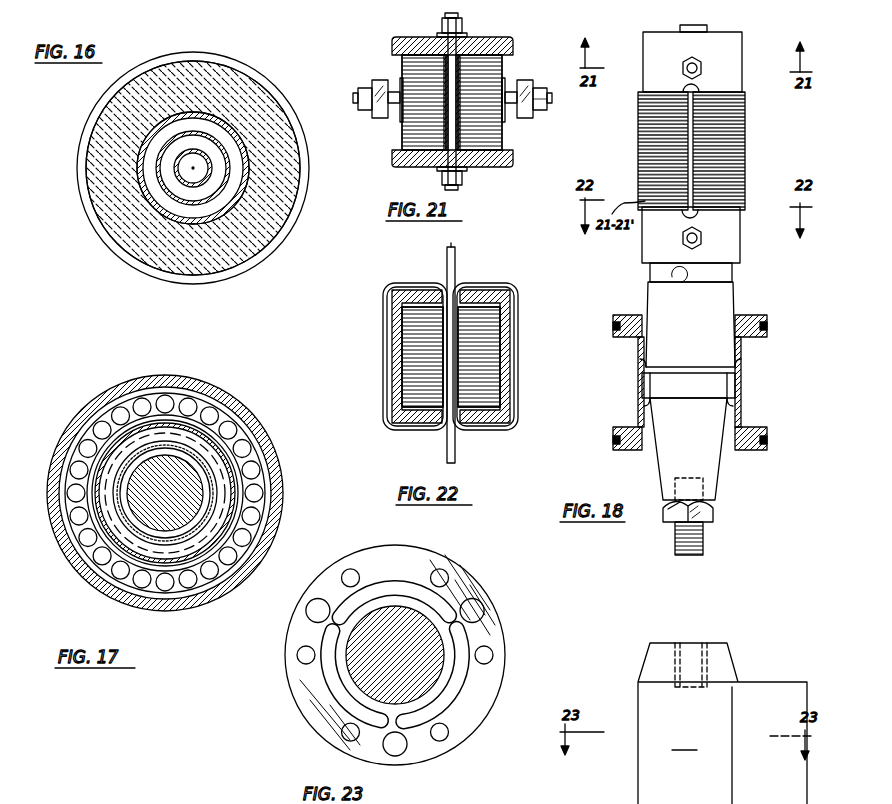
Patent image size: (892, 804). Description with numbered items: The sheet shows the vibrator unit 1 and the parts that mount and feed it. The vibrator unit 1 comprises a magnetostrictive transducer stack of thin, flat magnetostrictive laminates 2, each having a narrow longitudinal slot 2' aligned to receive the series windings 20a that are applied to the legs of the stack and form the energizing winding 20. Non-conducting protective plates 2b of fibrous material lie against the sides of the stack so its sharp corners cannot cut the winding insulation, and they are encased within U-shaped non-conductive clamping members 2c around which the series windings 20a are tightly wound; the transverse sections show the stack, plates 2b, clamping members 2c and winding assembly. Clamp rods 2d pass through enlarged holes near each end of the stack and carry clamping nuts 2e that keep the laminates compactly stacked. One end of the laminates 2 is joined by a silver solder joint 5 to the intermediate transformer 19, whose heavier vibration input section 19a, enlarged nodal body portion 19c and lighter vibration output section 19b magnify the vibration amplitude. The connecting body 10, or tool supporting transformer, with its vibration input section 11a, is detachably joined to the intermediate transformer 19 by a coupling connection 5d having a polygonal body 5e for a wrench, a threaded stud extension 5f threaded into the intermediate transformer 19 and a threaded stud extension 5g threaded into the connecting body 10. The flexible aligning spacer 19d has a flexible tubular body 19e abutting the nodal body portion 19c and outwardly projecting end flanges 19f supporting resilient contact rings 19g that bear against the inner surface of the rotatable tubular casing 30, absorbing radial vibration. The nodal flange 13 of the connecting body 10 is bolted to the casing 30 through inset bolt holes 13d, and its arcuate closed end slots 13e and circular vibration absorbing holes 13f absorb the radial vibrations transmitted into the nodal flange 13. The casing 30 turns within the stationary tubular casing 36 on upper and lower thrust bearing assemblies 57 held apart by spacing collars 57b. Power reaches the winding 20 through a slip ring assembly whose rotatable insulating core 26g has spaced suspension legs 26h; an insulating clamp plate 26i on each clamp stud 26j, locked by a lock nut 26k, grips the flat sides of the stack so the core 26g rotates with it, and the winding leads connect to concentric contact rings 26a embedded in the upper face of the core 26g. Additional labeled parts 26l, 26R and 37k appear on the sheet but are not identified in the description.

In FIG. 21, the vibrator unit 1 is at (398, 62).
In FIG. 22, the vibrator unit 1 is at (502, 350).
In FIG. 18, the vibrator unit 1 is at (745, 41).
In FIG. 21, the magnetostrictive laminates 2 is at (426, 102).
In FIG. 22, the magnetostrictive laminates 2 is at (452, 357).
In FIG. 18, the magnetostrictive laminates 2 is at (714, 270).
In FIG. 22, the longitudinal slot 2' is at (466, 353).
In FIG. 18, the longitudinal slot 2' is at (655, 141).
In FIG. 21, the non-conducting protective plates 2b is at (476, 42).
In FIG. 22, the non-conducting protective plates 2b is at (482, 292).
In FIG. 21, the non-conductive clamping members 2c is at (500, 46).
In FIG. 22, the non-conductive clamping members 2c is at (418, 292).
In FIG. 18, the non-conductive clamping members 2c is at (722, 70).
In FIG. 21, the clamp rods 2d is at (455, 80).
In FIG. 18, the clamp rods 2d is at (682, 65).
In FIG. 21, the clamping nuts 2e is at (438, 28).
In FIG. 18, the clamping nuts 2e is at (706, 67).
In FIG. 18, the silver solder joint 5 is at (682, 283).
In FIG. 18, the coupling connection 5d is at (716, 519).
In FIG. 18, the polygonal body 5e is at (670, 515).
In FIG. 18, the threaded stud extension 5f is at (706, 488).
In FIG. 18, the threaded stud extension 5g is at (705, 543).
In FIG. 23, the connecting body 10 is at (636, 785).
In FIG. 23, the vibration input section 11a is at (399, 618).
In FIG. 23, the nodal flange 13 is at (460, 729).
In FIG. 23, the inset bolt holes 13d is at (344, 572).
In FIG. 23, the arcuate closed end slots 13e is at (383, 590).
In FIG. 23, the circular vibration absorbing holes 13f is at (308, 608).
In FIG. 17, the intermediate transformer 19 is at (206, 477).
In FIG. 17, the vibration input section 19a is at (192, 490).
In FIG. 18, the vibration input section 19a is at (700, 326).
In FIG. 18, the vibration output section 19b is at (700, 454).
In FIG. 17, the enlarged nodal body portion 19c is at (203, 457).
In FIG. 18, the enlarged nodal body portion 19c is at (660, 386).
In FIG. 18, the flexible aligning spacer 19d is at (627, 315).
In FIG. 17, the flexible tubular body 19e is at (220, 501).
In FIG. 18, the flexible tubular body 19e is at (638, 362).
In FIG. 17, the end flanges 19f is at (201, 441).
In FIG. 18, the end flanges 19f is at (760, 317).
In FIG. 17, the resilient contact rings 19g is at (191, 428).
In FIG. 18, the resilient contact rings 19g is at (613, 326).
In FIG. 22, the energizing winding 20 is at (380, 303).
In FIG. 22, the series windings 20a is at (386, 343).
In FIG. 18, the series windings 20a is at (640, 145).
In FIG. 16, the contact rings 26a is at (232, 183).
In FIG. 16, the insulating core 26g is at (130, 198).
In FIG. 21, the suspension legs 26h is at (380, 130).
In FIG. 21, the insulating clamp plate 26i is at (505, 118).
In FIG. 21, the clamp stud 26j is at (352, 95).
In FIG. 21, the lock nut 26k is at (368, 118).
In FIG. 21, the retaining plate 26l is at (400, 118).
In FIG. 21, the bolt 26R is at (547, 117).
In FIG. 17, the rotatable tubular casing 30 is at (176, 413).
In FIG. 16, the stationary tubular casing 36 is at (306, 171).
In FIG. 17, the stationary tubular casing 36 is at (110, 388).
In FIG. 16, the disc 37k is at (288, 137).
In FIG. 17, the thrust bearing assemblies 57 is at (141, 400).
In FIG. 17, the spacing collars 57b is at (90, 428).